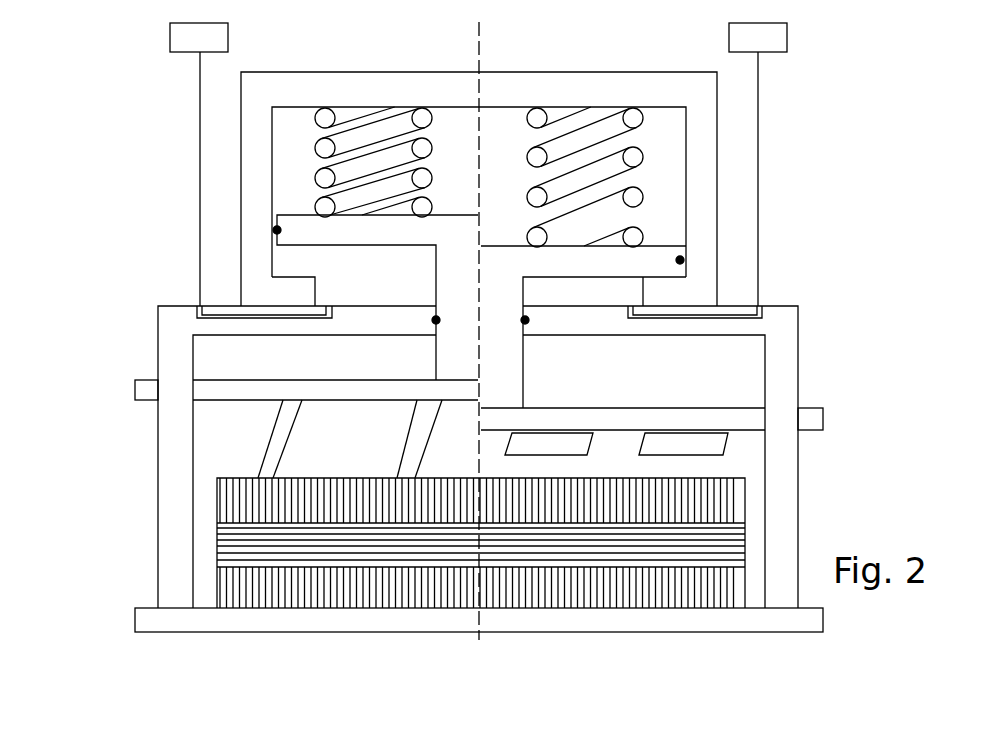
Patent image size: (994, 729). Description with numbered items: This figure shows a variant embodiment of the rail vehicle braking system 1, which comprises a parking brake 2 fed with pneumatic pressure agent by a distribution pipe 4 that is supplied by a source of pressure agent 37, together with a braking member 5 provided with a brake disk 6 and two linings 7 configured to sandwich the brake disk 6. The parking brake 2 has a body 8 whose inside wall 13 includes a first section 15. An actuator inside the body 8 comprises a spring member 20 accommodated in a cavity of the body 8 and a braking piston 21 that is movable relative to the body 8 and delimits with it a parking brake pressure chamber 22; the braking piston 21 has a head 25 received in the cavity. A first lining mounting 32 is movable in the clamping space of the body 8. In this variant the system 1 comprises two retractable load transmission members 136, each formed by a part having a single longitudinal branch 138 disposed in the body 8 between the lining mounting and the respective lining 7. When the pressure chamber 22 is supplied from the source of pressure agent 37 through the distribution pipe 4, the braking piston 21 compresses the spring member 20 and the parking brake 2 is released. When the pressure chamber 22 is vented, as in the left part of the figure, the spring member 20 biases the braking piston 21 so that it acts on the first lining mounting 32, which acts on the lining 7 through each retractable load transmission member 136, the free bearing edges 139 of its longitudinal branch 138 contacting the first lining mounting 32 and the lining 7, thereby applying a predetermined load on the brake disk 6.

The rail vehicle braking system 1 is at (106, 147).
The parking brake 2 is at (150, 268).
The distribution pipe 4 is at (200, 88).
The braking member 5 is at (205, 570).
The brake disk 6 is at (232, 545).
The lining 7 is at (230, 500).
The body 8 is at (375, 72).
The inside wall 13 is at (658, 296).
The first section 15 is at (663, 278).
The spring member 20 is at (398, 122).
The braking piston 21 is at (452, 263).
The parking brake pressure chamber 22 is at (364, 283).
The head 25 is at (476, 311).
The first lining mounting 32 is at (250, 385).
The source of pressure agent 37 is at (170, 37).
The retractable load transmission member 136 is at (417, 420).
The longitudinal branch 138 is at (413, 465).
The free bearing edge 139 is at (287, 422).